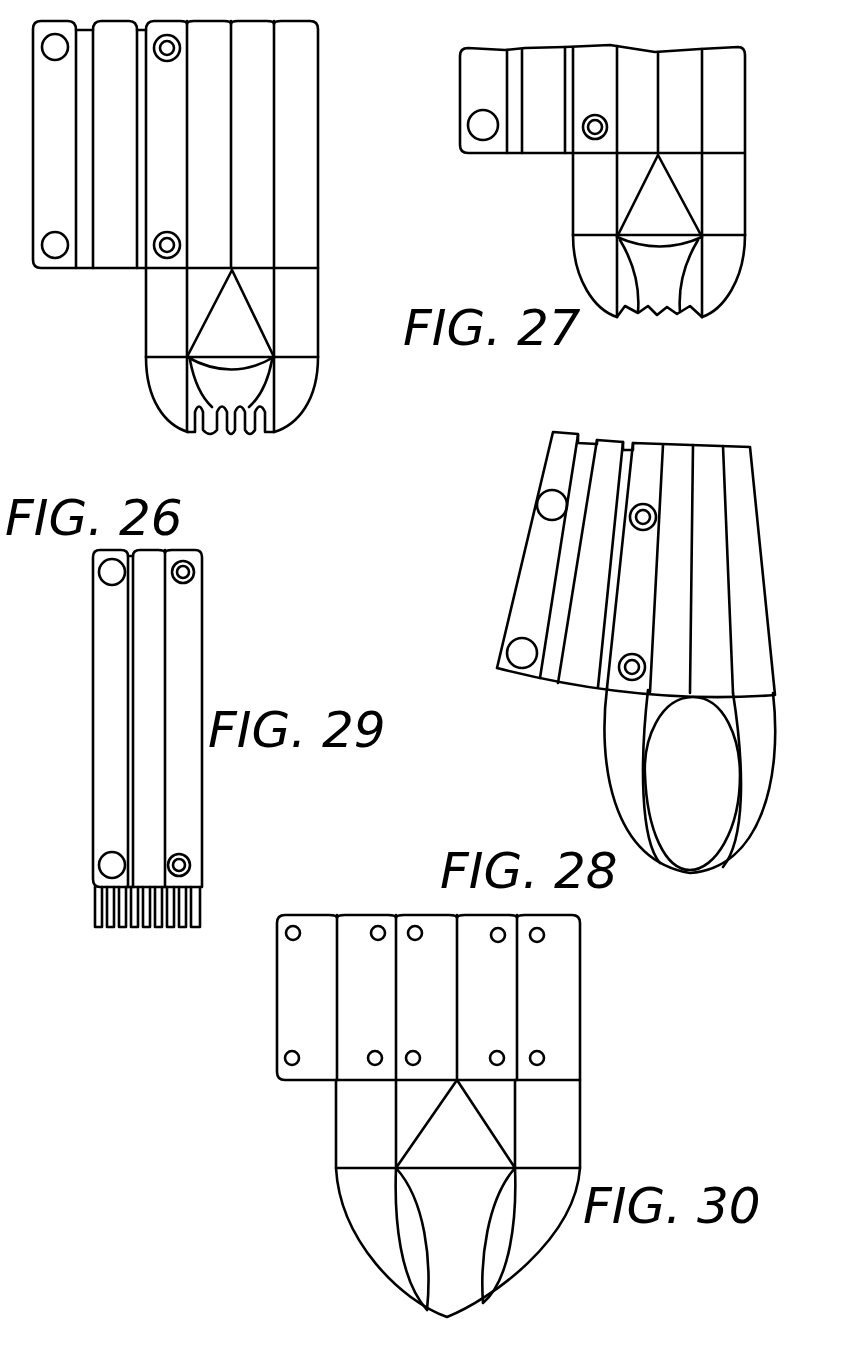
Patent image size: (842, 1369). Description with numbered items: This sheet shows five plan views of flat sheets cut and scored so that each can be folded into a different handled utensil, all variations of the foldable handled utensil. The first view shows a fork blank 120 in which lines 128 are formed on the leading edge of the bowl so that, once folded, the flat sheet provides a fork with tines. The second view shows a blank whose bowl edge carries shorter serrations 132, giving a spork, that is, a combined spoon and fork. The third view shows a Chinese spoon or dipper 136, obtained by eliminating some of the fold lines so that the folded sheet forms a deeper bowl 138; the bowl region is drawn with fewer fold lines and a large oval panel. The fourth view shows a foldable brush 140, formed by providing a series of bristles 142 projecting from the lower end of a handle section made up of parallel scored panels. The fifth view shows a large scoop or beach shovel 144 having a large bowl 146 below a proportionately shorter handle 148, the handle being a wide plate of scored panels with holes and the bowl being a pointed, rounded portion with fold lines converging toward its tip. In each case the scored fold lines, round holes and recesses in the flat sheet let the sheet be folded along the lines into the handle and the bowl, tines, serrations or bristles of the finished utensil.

In FIG. 26, the finger segment assembly 120 is at (175, 259).
In FIG. 26, the lines 128 is at (198, 434).
In FIG. 27, the shorter serrations 132 is at (620, 318).
In FIG. 28, the Chinese spoon or dipper 136 is at (636, 652).
In FIG. 28, the deeper bowl 138 is at (660, 842).
In FIG. 29, the foldable brush 140 is at (153, 803).
In FIG. 29, the bristles 142 is at (153, 949).
In FIG. 30, the large scoop or beach shovel 144 is at (451, 1116).
In FIG. 30, the large bowl 146 is at (332, 1159).
In FIG. 30, the shorter handle 148 is at (584, 1019).